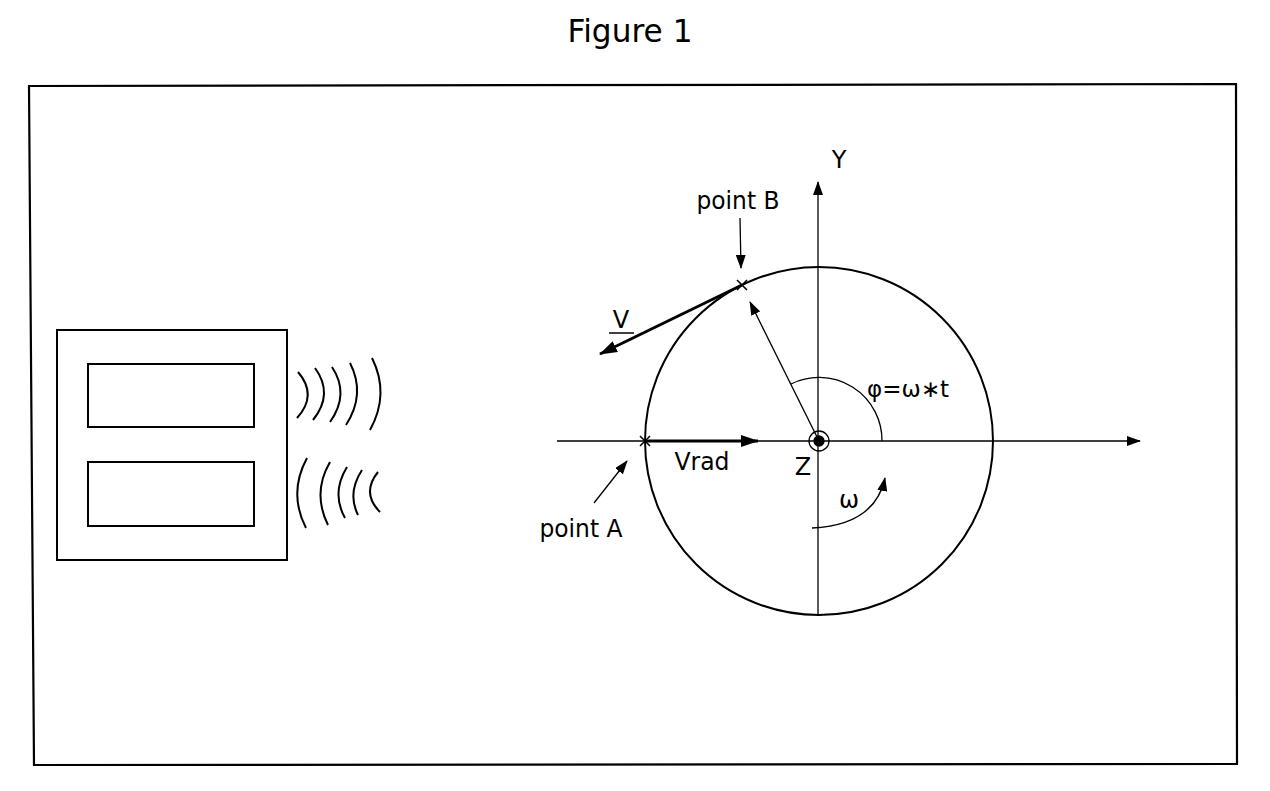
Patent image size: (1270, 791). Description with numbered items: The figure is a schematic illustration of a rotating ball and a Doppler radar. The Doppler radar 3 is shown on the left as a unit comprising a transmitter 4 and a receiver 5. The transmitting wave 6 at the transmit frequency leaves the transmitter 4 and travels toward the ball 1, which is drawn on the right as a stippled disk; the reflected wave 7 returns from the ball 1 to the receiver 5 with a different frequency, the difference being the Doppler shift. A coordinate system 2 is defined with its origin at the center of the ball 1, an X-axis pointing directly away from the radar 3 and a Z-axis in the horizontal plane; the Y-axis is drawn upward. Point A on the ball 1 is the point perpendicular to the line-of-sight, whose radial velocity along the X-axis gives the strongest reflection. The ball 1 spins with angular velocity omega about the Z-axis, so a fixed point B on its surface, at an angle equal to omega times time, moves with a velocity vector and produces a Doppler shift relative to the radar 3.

The ball 1 is at (927, 578).
The coordinate system 2 is at (1065, 443).
The Doppler radar 3 is at (250, 561).
The transmitter 4 is at (160, 364).
The receiver 5 is at (136, 527).
The transmitting wave 6 is at (352, 373).
The reflected wave 7 is at (358, 520).